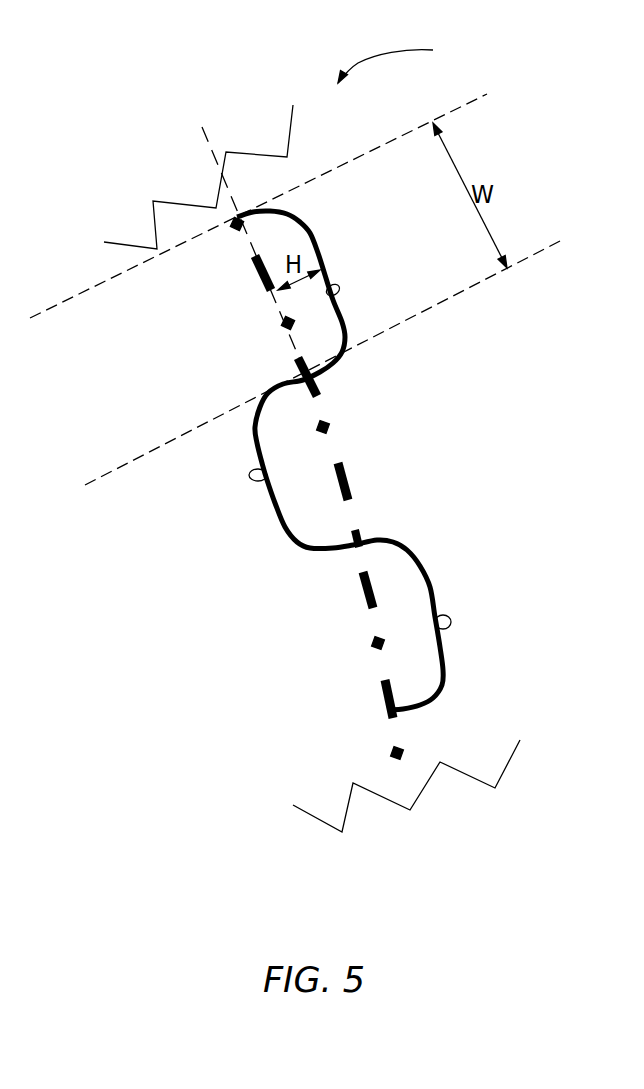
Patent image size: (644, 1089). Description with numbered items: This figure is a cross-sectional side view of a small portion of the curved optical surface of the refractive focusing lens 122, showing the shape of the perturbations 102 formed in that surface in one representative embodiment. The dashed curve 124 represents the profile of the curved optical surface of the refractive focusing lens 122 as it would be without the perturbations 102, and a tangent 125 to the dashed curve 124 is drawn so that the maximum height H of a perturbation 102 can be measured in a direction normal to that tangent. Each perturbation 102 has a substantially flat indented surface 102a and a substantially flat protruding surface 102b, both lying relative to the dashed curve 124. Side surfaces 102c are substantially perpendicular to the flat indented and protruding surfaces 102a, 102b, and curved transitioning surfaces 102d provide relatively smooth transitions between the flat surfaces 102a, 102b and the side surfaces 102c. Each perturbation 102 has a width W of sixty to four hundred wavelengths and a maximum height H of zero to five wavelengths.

The perturbation 102 is at (312, 240).
The substantially flat indented surface 102a is at (258, 472).
The substantially flat protruding surface 102b is at (333, 292).
The side surface 102c is at (237, 218).
The curved transitioning surface 102d is at (278, 212).
The refractive focusing lens 122 is at (410, 57).
The dashed curve 124 is at (258, 272).
The tangent 125 is at (212, 145).